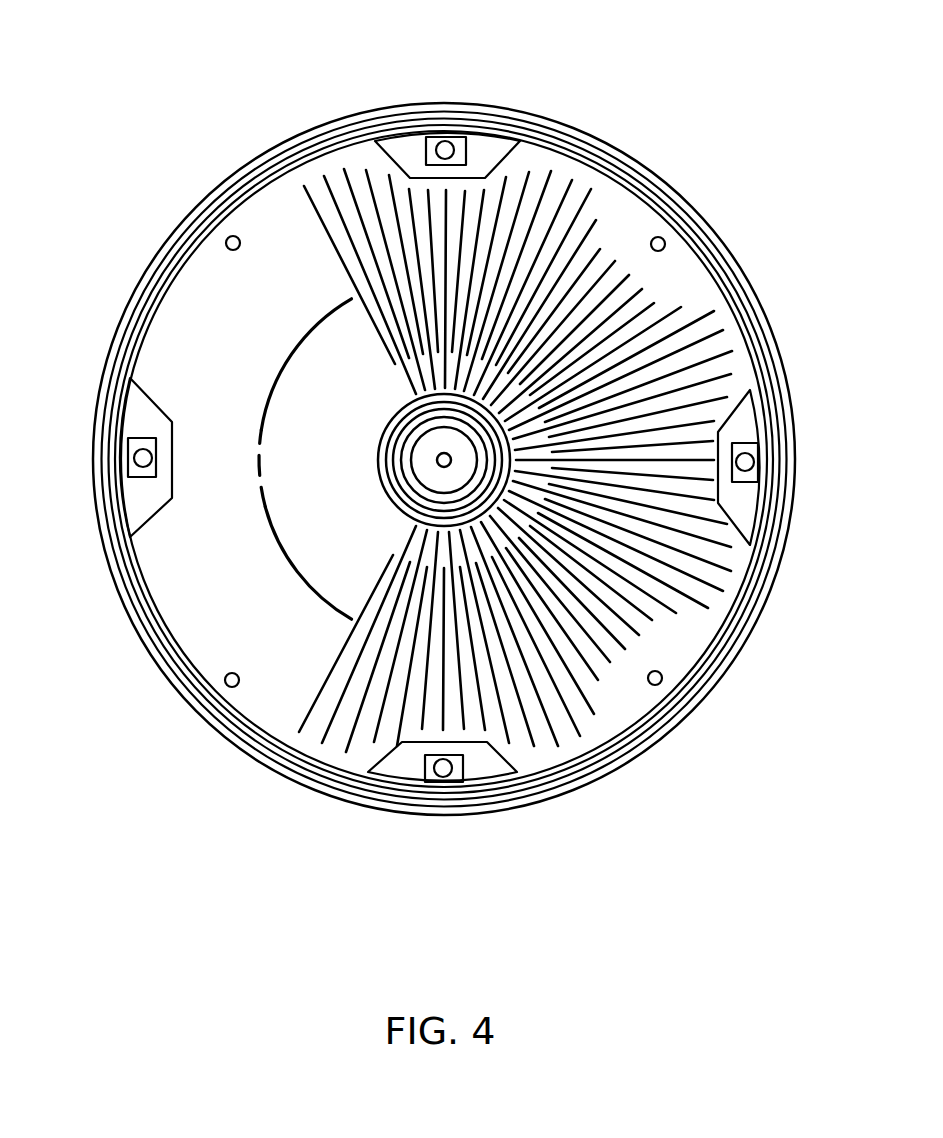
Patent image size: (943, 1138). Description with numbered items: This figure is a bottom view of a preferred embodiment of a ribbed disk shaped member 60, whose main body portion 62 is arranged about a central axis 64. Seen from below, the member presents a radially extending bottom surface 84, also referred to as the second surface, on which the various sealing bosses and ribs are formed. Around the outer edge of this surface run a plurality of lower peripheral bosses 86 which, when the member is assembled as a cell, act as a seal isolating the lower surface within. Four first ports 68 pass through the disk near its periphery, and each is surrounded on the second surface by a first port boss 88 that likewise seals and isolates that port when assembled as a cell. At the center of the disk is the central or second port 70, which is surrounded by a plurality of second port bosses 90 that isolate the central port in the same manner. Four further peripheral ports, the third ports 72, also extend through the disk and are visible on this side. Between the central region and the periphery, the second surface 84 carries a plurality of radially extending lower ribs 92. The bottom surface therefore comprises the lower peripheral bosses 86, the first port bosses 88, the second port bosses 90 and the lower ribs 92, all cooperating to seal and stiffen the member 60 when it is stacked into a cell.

The ribbed disk shaped member 60 is at (638, 106).
The main body portion 62 is at (553, 114).
The axis 64 is at (437, 463).
The peripheral ports 68 is at (446, 138).
The central port 70 is at (440, 470).
The peripheral ports 72 is at (229, 236).
The bottom surface 84 is at (228, 578).
The lower peripheral bosses 86 is at (143, 342).
The first port bosses 88 is at (392, 140).
The second port bosses 90 is at (390, 466).
The lower ribs 92 is at (373, 250).